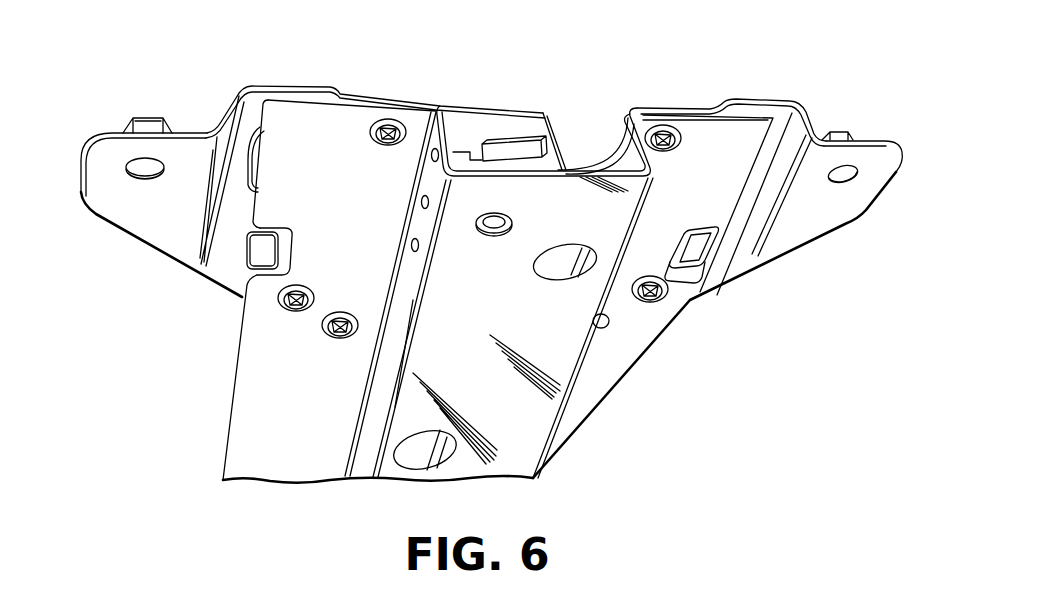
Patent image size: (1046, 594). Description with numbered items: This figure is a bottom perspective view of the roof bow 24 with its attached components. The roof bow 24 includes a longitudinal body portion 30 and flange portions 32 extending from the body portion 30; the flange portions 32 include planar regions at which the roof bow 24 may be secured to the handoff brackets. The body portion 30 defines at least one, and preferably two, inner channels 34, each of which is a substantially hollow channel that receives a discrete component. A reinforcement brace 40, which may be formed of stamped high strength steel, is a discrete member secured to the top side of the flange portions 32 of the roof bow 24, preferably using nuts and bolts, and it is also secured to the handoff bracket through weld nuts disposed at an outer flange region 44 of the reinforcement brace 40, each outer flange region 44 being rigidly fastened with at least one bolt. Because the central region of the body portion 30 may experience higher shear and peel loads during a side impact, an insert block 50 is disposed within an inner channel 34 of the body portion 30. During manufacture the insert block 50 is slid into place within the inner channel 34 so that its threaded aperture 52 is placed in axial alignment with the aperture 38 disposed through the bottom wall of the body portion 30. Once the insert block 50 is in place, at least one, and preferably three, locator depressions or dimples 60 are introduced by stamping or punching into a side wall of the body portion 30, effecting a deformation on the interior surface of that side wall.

The roof bow 24 is at (727, 135).
The body portion 30 is at (495, 413).
The flange portions 32 is at (300, 373).
The inner channel 34 is at (590, 140).
The aperture 38 is at (488, 218).
The reinforcement brace 40 is at (762, 103).
The outer flange region 44 is at (147, 223).
The insert block 50 is at (497, 133).
The threaded aperture 52 is at (498, 233).
The dimples 60 is at (411, 247).